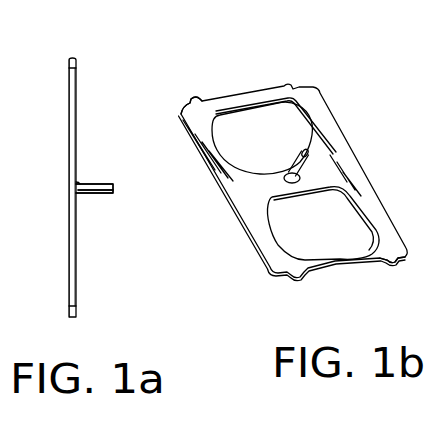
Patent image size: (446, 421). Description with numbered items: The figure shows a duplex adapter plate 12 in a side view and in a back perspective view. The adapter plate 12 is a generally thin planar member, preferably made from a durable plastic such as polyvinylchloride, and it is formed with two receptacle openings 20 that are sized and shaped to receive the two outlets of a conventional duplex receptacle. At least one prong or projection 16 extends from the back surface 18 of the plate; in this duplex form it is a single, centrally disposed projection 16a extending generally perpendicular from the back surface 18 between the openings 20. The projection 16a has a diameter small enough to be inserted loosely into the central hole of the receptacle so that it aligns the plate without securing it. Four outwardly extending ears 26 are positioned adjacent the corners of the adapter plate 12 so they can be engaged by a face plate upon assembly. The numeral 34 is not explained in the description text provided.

In FIG. 1a, the adapter plate 12 is at (76, 92).
In FIG. 1b, the adapter plate 12 is at (333, 118).
In FIG. 1a, the back surface 18 is at (77, 129).
In FIG. 1b, the back surface 18 is at (354, 163).
In FIG. 1a, the prong or projection 16 is at (100, 196).
In FIG. 1a, the projection 16a is at (94, 188).
In FIG. 1b, the projection 16a is at (293, 168).
In FIG. 1b, the receptacle openings 20 is at (293, 103).
In FIG. 1b, the ears 26 is at (195, 98).
In FIG. 1b, the fastener 34 is at (413, 273).